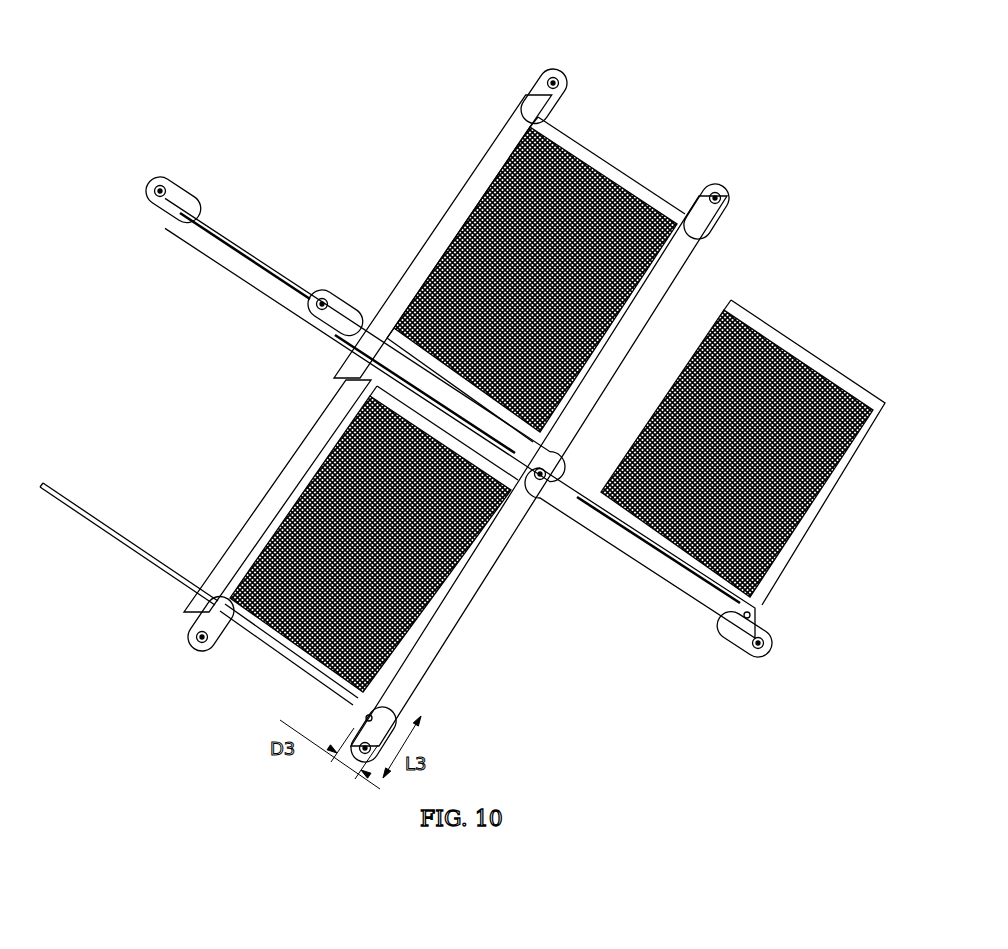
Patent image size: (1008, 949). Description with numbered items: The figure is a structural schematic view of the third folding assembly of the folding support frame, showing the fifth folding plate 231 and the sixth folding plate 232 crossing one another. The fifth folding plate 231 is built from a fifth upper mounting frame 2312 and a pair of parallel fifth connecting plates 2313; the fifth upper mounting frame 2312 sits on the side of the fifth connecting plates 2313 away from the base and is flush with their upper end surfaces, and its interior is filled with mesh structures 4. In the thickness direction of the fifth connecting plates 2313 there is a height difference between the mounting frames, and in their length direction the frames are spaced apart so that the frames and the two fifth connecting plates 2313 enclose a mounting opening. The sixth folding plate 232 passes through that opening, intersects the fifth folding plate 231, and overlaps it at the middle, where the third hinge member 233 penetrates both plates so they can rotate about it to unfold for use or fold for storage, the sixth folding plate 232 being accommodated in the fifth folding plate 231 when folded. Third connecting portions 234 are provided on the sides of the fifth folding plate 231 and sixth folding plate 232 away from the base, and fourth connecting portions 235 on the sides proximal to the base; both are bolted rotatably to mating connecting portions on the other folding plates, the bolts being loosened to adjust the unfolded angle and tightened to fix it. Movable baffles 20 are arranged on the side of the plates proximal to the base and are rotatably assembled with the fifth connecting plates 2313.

The mesh structure 4 is at (583, 143).
The movable baffle 20 is at (777, 330).
The fifth folding plate 231 is at (287, 482).
The sixth folding plate 232 is at (665, 568).
The third hinge member 233 is at (546, 490).
The third connecting portion 234 is at (210, 652).
The fourth connecting portion 235 is at (553, 70).
The fifth upper mounting frame 2312 is at (468, 190).
The fifth connecting plate 2313 is at (460, 602).